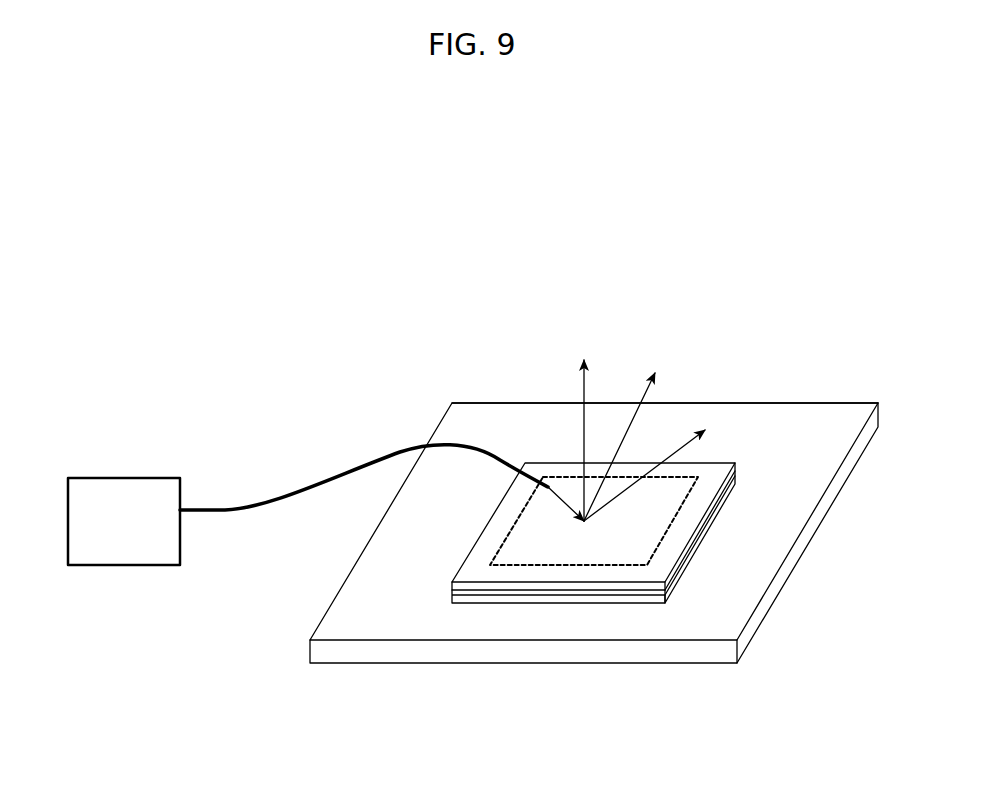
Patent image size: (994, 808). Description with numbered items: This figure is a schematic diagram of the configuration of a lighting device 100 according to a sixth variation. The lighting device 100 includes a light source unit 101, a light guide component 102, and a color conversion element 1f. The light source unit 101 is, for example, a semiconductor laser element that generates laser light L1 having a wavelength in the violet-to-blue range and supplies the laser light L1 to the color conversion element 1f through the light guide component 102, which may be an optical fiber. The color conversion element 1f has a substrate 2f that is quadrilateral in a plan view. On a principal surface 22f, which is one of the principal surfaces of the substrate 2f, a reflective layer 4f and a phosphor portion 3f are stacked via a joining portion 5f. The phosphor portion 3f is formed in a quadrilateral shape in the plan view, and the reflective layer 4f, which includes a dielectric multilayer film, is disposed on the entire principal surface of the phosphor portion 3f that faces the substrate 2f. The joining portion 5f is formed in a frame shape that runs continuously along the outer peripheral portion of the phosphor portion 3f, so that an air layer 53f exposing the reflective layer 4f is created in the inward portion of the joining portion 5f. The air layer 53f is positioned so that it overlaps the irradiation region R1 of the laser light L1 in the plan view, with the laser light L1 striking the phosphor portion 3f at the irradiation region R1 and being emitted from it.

The lighting device 100 is at (282, 260).
The light source unit 101 is at (133, 482).
The light guide component 102 is at (280, 497).
The color conversion element 1f is at (594, 531).
The substrate 2f is at (427, 418).
The principal surface 22f is at (482, 427).
The phosphor portion 3f is at (473, 570).
The reflective layer 4f is at (473, 592).
The joining portion 5f is at (520, 600).
The air layer 53f is at (640, 550).
The laser light L1 is at (567, 504).
The irradiation region R1 is at (578, 526).